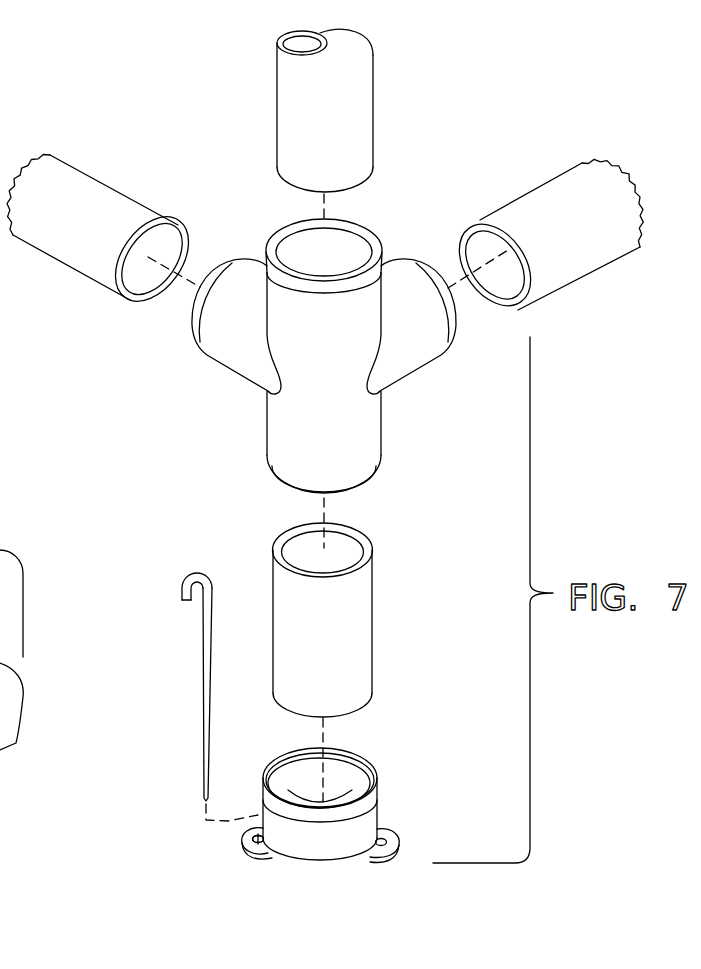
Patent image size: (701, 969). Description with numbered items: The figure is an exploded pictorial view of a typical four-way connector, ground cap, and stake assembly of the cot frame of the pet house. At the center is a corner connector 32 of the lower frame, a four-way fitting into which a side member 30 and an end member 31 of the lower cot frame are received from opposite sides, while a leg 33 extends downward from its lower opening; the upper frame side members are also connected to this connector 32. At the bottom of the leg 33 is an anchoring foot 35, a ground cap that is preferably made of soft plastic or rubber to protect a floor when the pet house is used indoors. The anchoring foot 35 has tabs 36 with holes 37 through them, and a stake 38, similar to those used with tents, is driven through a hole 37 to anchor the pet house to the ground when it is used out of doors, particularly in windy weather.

The side member 30 is at (77, 268).
The end member 31 is at (564, 184).
The corner connector 32 is at (381, 428).
The leg 33 is at (372, 617).
The anchoring foot 35 is at (294, 836).
The tab 36 is at (252, 852).
The hole 37 is at (252, 836).
The stake 38 is at (203, 692).